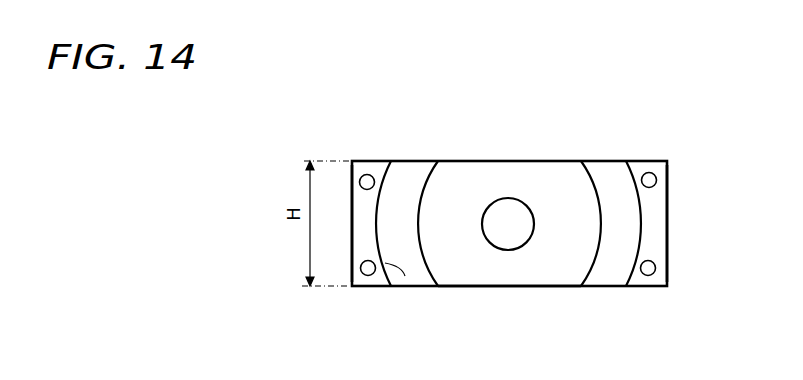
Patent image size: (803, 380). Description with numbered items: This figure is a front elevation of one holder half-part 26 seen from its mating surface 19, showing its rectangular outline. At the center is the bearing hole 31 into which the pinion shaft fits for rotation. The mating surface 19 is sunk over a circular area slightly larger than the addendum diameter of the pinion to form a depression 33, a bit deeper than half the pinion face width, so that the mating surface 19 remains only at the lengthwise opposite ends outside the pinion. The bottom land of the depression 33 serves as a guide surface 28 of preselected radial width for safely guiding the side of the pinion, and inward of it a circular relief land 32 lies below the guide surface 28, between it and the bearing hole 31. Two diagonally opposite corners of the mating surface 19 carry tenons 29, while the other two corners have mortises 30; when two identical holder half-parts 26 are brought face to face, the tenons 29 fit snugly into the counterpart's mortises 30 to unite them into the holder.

The mating surface 19 is at (360, 236).
The holder half-part 26 is at (639, 160).
The guide surface 28 is at (404, 190).
The tenon 29 is at (365, 174).
The mortise 30 is at (367, 277).
The bearing hole 31 is at (511, 238).
The circular relief land 32 is at (562, 266).
The depression 33 is at (405, 276).